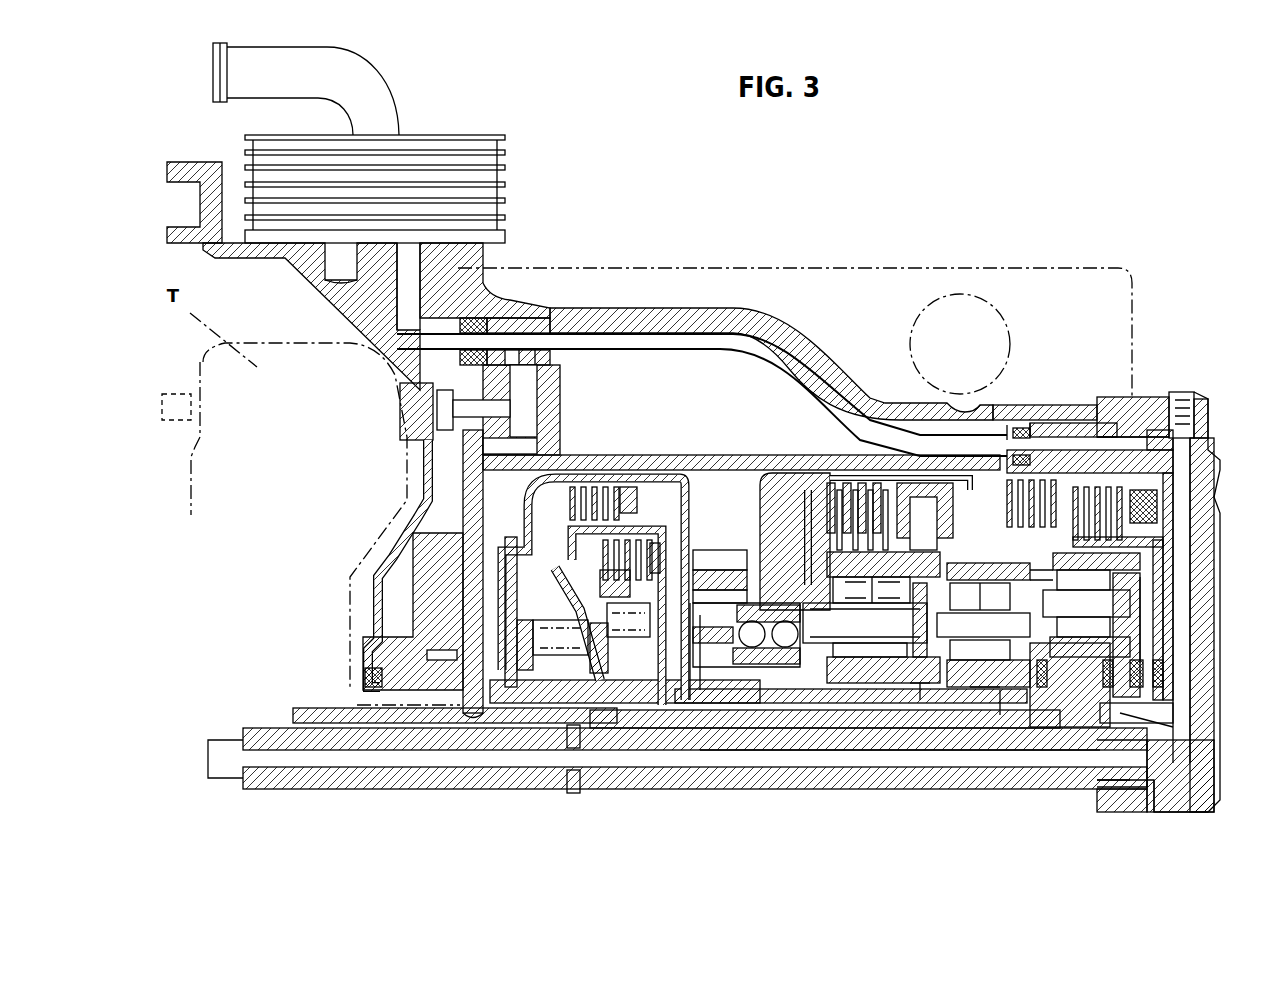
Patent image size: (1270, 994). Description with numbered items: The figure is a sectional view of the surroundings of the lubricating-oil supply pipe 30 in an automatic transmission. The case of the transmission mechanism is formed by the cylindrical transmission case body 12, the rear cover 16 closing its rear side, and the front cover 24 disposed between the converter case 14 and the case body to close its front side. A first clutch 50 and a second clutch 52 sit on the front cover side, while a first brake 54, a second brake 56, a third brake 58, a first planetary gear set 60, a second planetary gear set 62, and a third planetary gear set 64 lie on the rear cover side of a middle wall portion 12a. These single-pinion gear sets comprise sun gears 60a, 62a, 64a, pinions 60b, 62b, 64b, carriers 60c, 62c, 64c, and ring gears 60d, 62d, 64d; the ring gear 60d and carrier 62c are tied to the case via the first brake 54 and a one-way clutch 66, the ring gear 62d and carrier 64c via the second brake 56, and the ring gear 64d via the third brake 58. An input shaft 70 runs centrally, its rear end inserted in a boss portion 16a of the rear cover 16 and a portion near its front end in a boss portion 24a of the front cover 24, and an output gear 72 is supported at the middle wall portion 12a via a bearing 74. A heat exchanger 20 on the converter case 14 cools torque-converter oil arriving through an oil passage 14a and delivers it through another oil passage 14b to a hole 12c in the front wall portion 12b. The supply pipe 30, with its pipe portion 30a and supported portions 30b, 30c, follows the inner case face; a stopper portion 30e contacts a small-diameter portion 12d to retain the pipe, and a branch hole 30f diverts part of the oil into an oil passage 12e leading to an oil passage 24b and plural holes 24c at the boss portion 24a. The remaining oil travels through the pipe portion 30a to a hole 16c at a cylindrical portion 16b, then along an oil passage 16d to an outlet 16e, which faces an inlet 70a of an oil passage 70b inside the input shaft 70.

The transmission case body 12 is at (795, 330).
The middle wall portion 12a is at (767, 526).
The front wall portion 12b is at (483, 297).
The hole 12c is at (520, 338).
The small-diameter portion 12d is at (555, 360).
The oil passage 12e is at (520, 393).
The converter case 14 is at (311, 295).
The oil passage 14a is at (350, 272).
The oil passage 14b is at (415, 300).
The rear cover 16 is at (1150, 394).
The boss portion 16a is at (1118, 797).
The cylindrical portion 16b is at (1037, 427).
The hole 16c is at (1013, 430).
The oil passage 16d is at (1117, 440).
The outlet 16e is at (1160, 770).
The heat exchanger 20 is at (440, 130).
The front cover 24 is at (446, 463).
The boss portion 24a is at (560, 700).
The oil passage 24b is at (463, 507).
The holes 24c is at (540, 695).
The lubricating-oil supply pipe 30 is at (682, 364).
The pipe portion 30a is at (738, 352).
The supported portion 30b is at (478, 325).
The supported portion 30c is at (1003, 430).
The stopper portion 30e is at (548, 367).
The branch hole 30f is at (520, 352).
The first clutch 50 is at (649, 504).
The second clutch 52 is at (675, 548).
The first brake 54 is at (850, 487).
The second brake 56 is at (1043, 480).
The third brake 58 is at (1103, 480).
The first planetary gear set 60 is at (858, 637).
The sun gear 60a is at (920, 688).
The pinions 60b is at (830, 690).
The carrier 60c is at (785, 697).
The ring gear 60d is at (800, 483).
The second planetary gear set 62 is at (973, 637).
The sun gear 62a is at (985, 690).
The pinions 62b is at (1000, 708).
The carrier 62c is at (927, 690).
The ring gear 62d is at (1120, 585).
The third planetary gear set 64 is at (1073, 614).
The sun gear 64a is at (1062, 682).
The pinions 64b is at (1140, 625).
The carrier 64c is at (1052, 673).
The ring gear 64d is at (1155, 548).
The one-way clutch 66 is at (855, 498).
The input shaft 70 is at (611, 807).
The inlet 70a is at (1133, 733).
The oil passage 70b is at (865, 757).
The output gear 72 is at (721, 540).
The bearing 74 is at (757, 595).